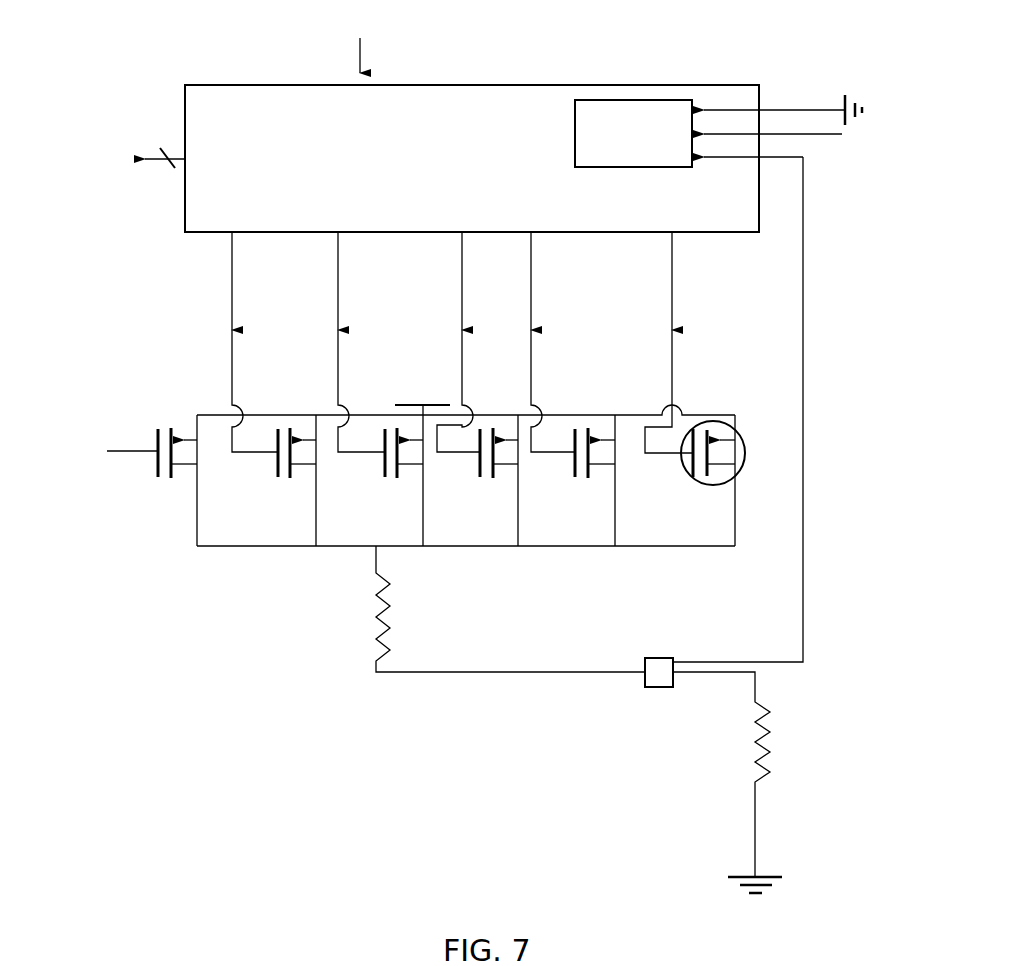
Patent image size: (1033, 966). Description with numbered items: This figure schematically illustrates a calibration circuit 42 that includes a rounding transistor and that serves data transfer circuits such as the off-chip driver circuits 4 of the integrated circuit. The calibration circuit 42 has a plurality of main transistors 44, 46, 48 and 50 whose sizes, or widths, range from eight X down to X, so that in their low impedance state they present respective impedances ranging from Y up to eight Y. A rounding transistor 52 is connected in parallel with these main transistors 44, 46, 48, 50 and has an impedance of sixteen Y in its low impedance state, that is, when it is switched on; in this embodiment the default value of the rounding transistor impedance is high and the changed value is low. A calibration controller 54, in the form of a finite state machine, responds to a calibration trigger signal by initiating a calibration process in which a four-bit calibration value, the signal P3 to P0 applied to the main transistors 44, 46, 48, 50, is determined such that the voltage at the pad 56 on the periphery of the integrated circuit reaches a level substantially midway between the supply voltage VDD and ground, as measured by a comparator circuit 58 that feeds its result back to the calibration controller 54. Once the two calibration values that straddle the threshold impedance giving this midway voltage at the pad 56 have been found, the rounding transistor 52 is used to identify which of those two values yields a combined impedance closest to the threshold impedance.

The off-chip driver circuits 4 is at (133, 163).
The calibration circuit 42 is at (214, 744).
The main transistor 44 is at (290, 478).
The main transistor 46 is at (397, 478).
The main transistor 48 is at (493, 478).
The main transistor 50 is at (588, 478).
The rounding transistor 52 is at (688, 483).
The calibration controller 54 is at (482, 85).
The pad 56 is at (655, 687).
The comparator circuit 58 is at (638, 167).